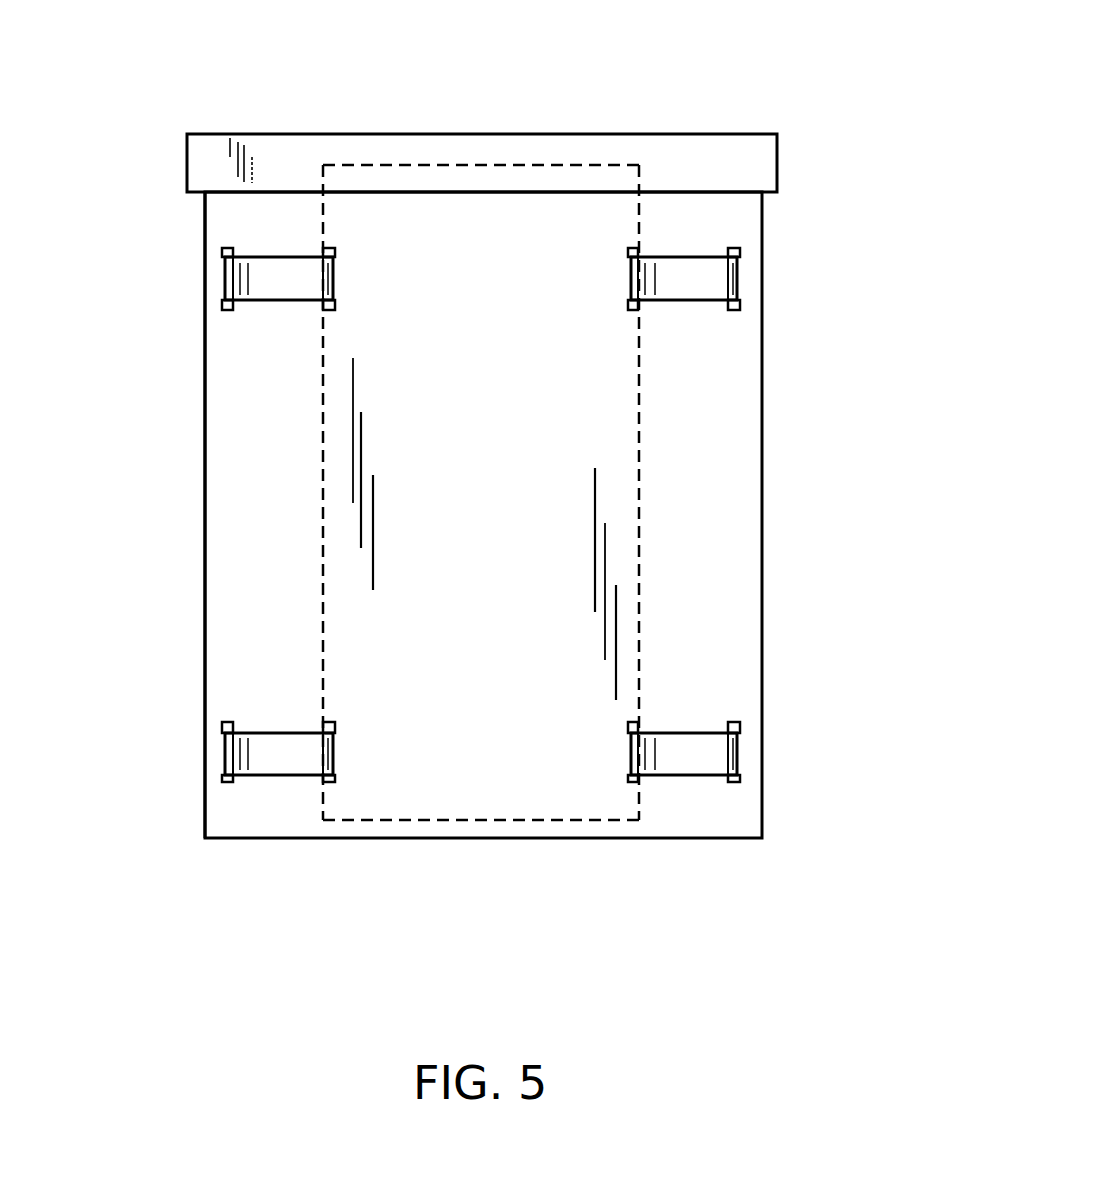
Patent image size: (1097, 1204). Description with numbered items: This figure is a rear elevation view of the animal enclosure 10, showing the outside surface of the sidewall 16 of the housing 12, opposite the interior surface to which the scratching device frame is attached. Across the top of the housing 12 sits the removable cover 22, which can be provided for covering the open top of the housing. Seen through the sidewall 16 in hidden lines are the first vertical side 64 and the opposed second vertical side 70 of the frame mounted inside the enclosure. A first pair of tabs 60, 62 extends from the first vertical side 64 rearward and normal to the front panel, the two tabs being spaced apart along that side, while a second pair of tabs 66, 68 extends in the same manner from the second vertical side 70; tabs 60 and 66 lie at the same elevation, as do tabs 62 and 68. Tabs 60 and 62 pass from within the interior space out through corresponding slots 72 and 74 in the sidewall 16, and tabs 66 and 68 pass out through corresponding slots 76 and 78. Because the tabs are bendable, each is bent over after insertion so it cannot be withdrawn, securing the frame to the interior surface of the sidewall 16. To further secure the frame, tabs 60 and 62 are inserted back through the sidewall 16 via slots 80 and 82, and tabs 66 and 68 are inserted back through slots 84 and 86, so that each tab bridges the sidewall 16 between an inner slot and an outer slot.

The animal enclosure 10 is at (878, 118).
The housing 12 is at (762, 585).
The sidewall 16 is at (205, 522).
The removable cover 22 is at (500, 134).
The tab 60 is at (680, 300).
The tab 62 is at (690, 768).
The first vertical side 64 is at (639, 467).
The tab 66 is at (275, 300).
The tab 68 is at (275, 782).
The second vertical side 70 is at (323, 453).
The slot 72 is at (632, 250).
The slot 74 is at (634, 782).
The slot 76 is at (323, 248).
The slot 78 is at (325, 782).
The slot 80 is at (740, 250).
The slot 82 is at (740, 782).
The slot 84 is at (226, 250).
The slot 86 is at (226, 782).